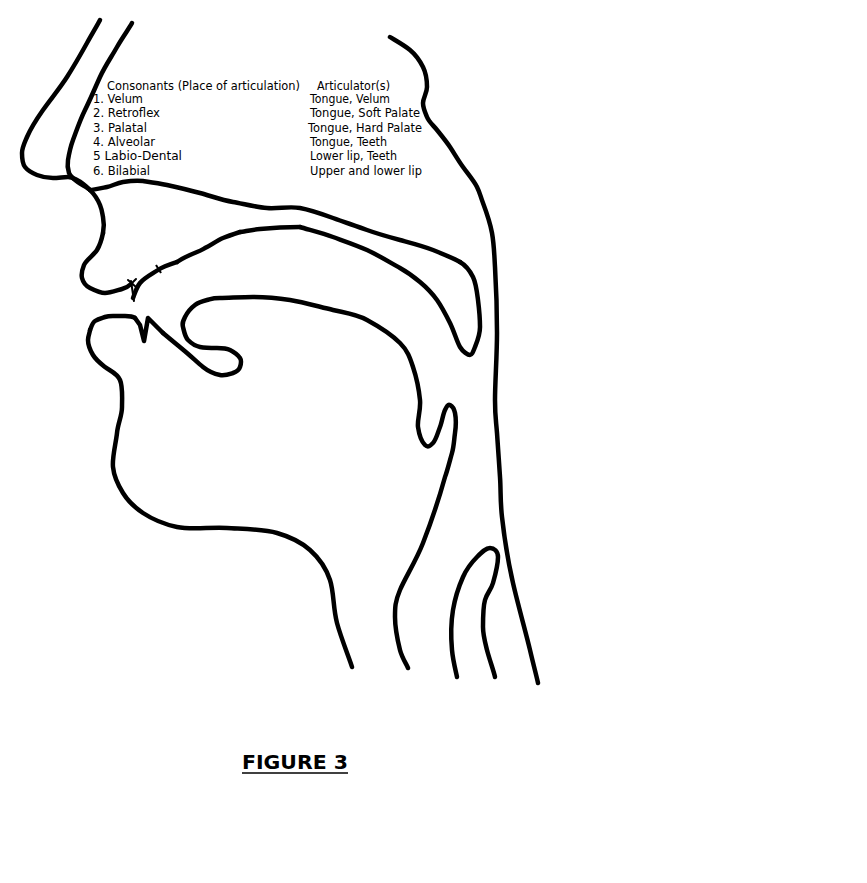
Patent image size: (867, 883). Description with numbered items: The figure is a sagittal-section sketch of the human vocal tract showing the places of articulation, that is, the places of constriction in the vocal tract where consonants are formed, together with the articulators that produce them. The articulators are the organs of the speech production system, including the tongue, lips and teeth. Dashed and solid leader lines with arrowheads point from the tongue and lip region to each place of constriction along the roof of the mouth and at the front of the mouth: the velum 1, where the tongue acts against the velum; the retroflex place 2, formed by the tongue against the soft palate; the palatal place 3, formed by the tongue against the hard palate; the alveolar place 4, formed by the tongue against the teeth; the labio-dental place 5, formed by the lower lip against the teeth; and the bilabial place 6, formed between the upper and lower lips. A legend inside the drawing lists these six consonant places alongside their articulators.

The velum (tongue, velum place of articulation) 1 is at (250, 302).
The retroflex (tongue, soft palate) 2 is at (217, 343).
The palatal (tongue, hard palate) 3 is at (200, 302).
The alveolar ridge (tongue, teeth) 4 is at (197, 302).
The labio-dental (lower lip, teeth) 5 is at (107, 313).
The bilabial (upper and lower lip) 6 is at (105, 297).